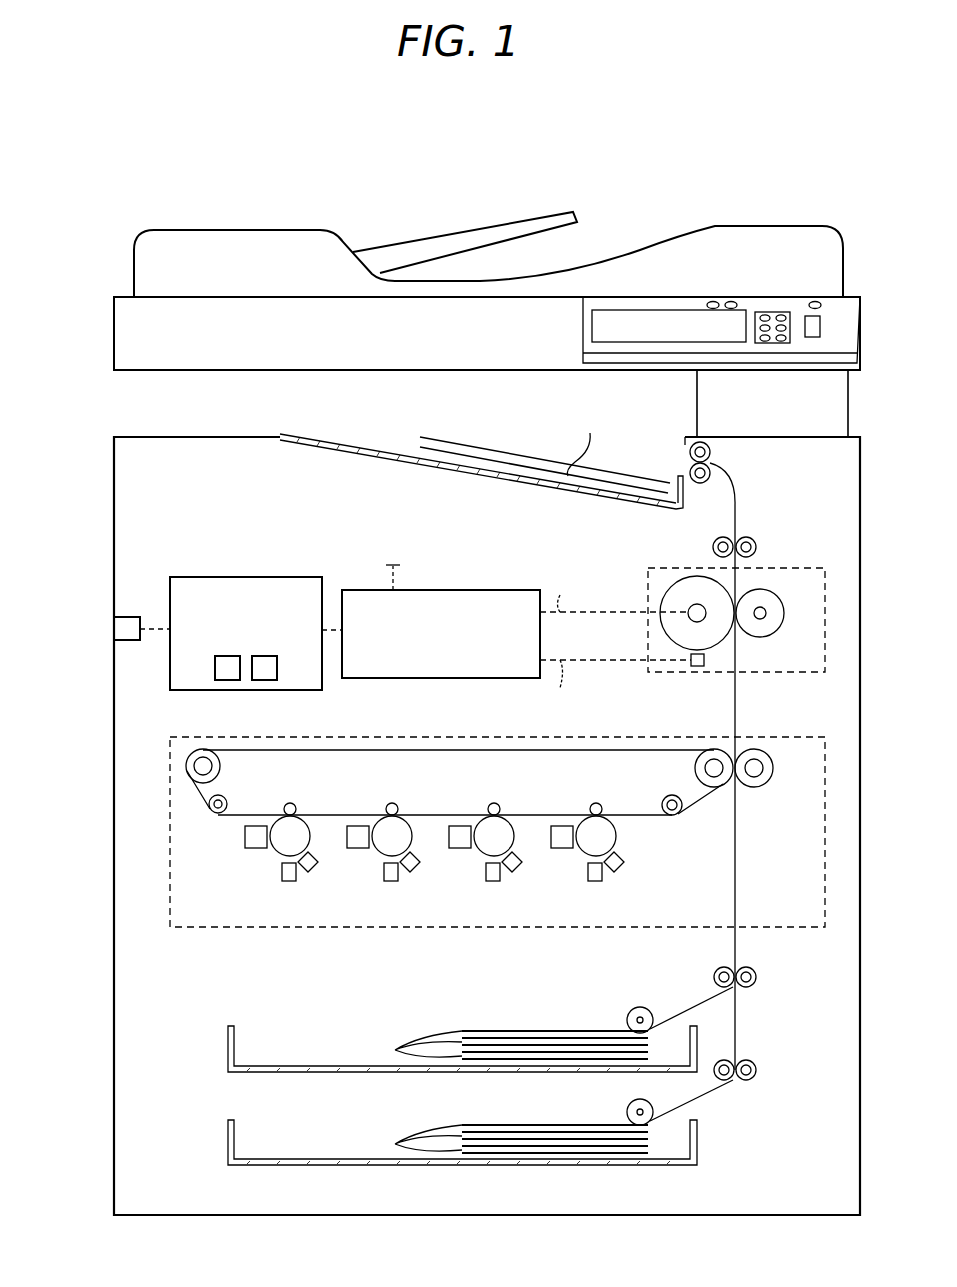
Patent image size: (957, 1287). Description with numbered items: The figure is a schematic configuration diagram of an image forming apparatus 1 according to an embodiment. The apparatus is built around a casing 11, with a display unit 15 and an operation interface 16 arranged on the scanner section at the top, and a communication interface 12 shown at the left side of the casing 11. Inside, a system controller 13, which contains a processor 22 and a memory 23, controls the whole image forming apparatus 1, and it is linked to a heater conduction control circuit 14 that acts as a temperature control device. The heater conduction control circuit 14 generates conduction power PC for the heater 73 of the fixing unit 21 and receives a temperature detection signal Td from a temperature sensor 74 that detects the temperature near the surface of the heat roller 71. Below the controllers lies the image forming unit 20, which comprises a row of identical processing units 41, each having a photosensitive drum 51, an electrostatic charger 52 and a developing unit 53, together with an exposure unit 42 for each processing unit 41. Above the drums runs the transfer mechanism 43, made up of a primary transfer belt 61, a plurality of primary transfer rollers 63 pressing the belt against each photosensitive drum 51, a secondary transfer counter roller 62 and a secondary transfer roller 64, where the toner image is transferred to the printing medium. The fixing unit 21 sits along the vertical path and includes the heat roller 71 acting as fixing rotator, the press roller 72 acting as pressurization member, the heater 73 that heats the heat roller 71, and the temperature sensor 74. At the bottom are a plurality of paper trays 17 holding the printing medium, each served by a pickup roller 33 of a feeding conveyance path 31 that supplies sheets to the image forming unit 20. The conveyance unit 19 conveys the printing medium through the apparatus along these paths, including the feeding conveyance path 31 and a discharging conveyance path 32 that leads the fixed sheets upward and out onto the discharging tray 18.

The image forming apparatus 1 is at (505, 176).
The casing 11 is at (112, 453).
The communication interface 12 is at (130, 617).
The system controller 13 is at (246, 630).
The heater conduction control circuit 14 is at (441, 590).
The display unit 15 is at (628, 310).
The operation interface 16 is at (775, 312).
The paper tray 17 is at (226, 1046).
The discharging tray 18 is at (372, 434).
The conveyance unit 19 is at (755, 520).
The image forming unit 20 is at (612, 737).
The fixing unit 21 is at (720, 622).
The processor 22 is at (228, 680).
The memory 23 is at (265, 680).
The feeding conveyance path 31 is at (745, 968).
The discharging conveyance path 32 is at (737, 500).
The pickup roller 33 is at (627, 1010).
The processing unit 41 is at (444, 867).
The exposure unit 42 is at (289, 881).
The transfer mechanism 43 is at (437, 742).
The photosensitive drum 51 is at (300, 822).
The electrostatic charger 52 is at (469, 878).
The developing unit 53 is at (256, 848).
The primary transfer belt 61 is at (386, 750).
The secondary transfer counter roller 62 is at (695, 770).
The primary transfer roller 63 is at (290, 803).
The secondary transfer roller 64 is at (772, 782).
The heat roller 71 is at (663, 590).
The press roller 72 is at (785, 605).
The heater 73 is at (688, 620).
The temperature sensor 74 is at (699, 668).